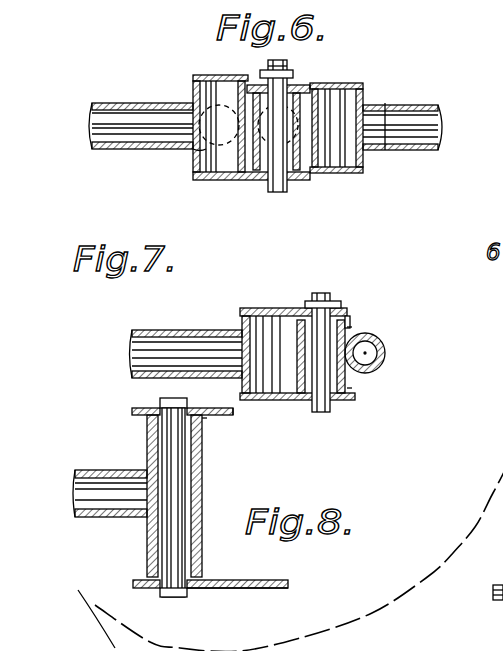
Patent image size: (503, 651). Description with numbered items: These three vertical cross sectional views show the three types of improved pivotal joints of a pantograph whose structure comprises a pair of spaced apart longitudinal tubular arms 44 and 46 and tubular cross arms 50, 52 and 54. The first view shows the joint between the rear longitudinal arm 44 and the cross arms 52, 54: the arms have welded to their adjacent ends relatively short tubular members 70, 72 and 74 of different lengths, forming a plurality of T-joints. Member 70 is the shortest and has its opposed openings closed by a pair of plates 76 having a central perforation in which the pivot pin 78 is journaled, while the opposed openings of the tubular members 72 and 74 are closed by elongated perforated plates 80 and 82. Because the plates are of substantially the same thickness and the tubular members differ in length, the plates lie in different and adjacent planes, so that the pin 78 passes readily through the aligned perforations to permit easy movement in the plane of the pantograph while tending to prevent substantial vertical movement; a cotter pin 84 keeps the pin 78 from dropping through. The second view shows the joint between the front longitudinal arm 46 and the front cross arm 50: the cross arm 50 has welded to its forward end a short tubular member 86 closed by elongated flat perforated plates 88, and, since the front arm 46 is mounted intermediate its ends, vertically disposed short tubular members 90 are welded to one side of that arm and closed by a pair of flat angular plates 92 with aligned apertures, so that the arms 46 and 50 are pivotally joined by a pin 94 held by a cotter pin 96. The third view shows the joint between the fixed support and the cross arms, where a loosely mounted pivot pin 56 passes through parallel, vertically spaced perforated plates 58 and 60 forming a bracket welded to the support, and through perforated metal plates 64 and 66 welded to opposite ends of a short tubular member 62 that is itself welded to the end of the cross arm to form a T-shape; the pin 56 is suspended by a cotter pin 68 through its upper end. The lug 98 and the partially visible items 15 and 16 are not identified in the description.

In FIG. 6, the rear longitudinal arm 44 is at (321, 88).
In FIG. 7, the front longitudinal arm 46 is at (384, 346).
In FIG. 7, the front cross arm 50 is at (164, 330).
In FIG. 6, the rear cross arm 52 is at (418, 110).
In FIG. 6, the cross arm 54 is at (126, 102).
In FIG. 7, the pivot pin 56 is at (160, 396).
In FIG. 7, the perforated plate 58 is at (225, 408).
In FIG. 7, the perforated plate 60 is at (233, 589).
In FIG. 7, the tubular member 62 is at (202, 465).
In FIG. 7, the perforated metal plate 64 is at (203, 416).
In FIG. 7, the perforated metal plate 66 is at (198, 581).
In FIG. 7, the cotter pin 68 is at (138, 403).
In FIG. 6, the tubular member 70 is at (243, 176).
In FIG. 6, the tubular member 72 is at (348, 174).
In FIG. 6, the tubular member 74 is at (200, 176).
In FIG. 6, the plates 76 is at (298, 182).
In FIG. 6, the pivot pin 78 is at (270, 188).
In FIG. 6, the elongated perforated plates 80 is at (385, 104).
In FIG. 6, the elongated perforated plates 82 is at (192, 80).
In FIG. 6, the cotter pin 84 is at (293, 78).
In FIG. 7, the tubular member 86 is at (262, 400).
In FIG. 7, the elongated flat perforated plates 88 is at (268, 316).
In FIG. 7, the tubular members 90 is at (350, 327).
In FIG. 7, the angular plates 92 is at (350, 388).
In FIG. 7, the pin 94 is at (313, 299).
In FIG. 7, the cotter pin 96 is at (335, 305).
In FIG. 7, the lug 98 is at (349, 318).
In FIG. 8, the frame member 15 is at (492, 624).
In FIG. 8, the frame member 16 is at (492, 642).